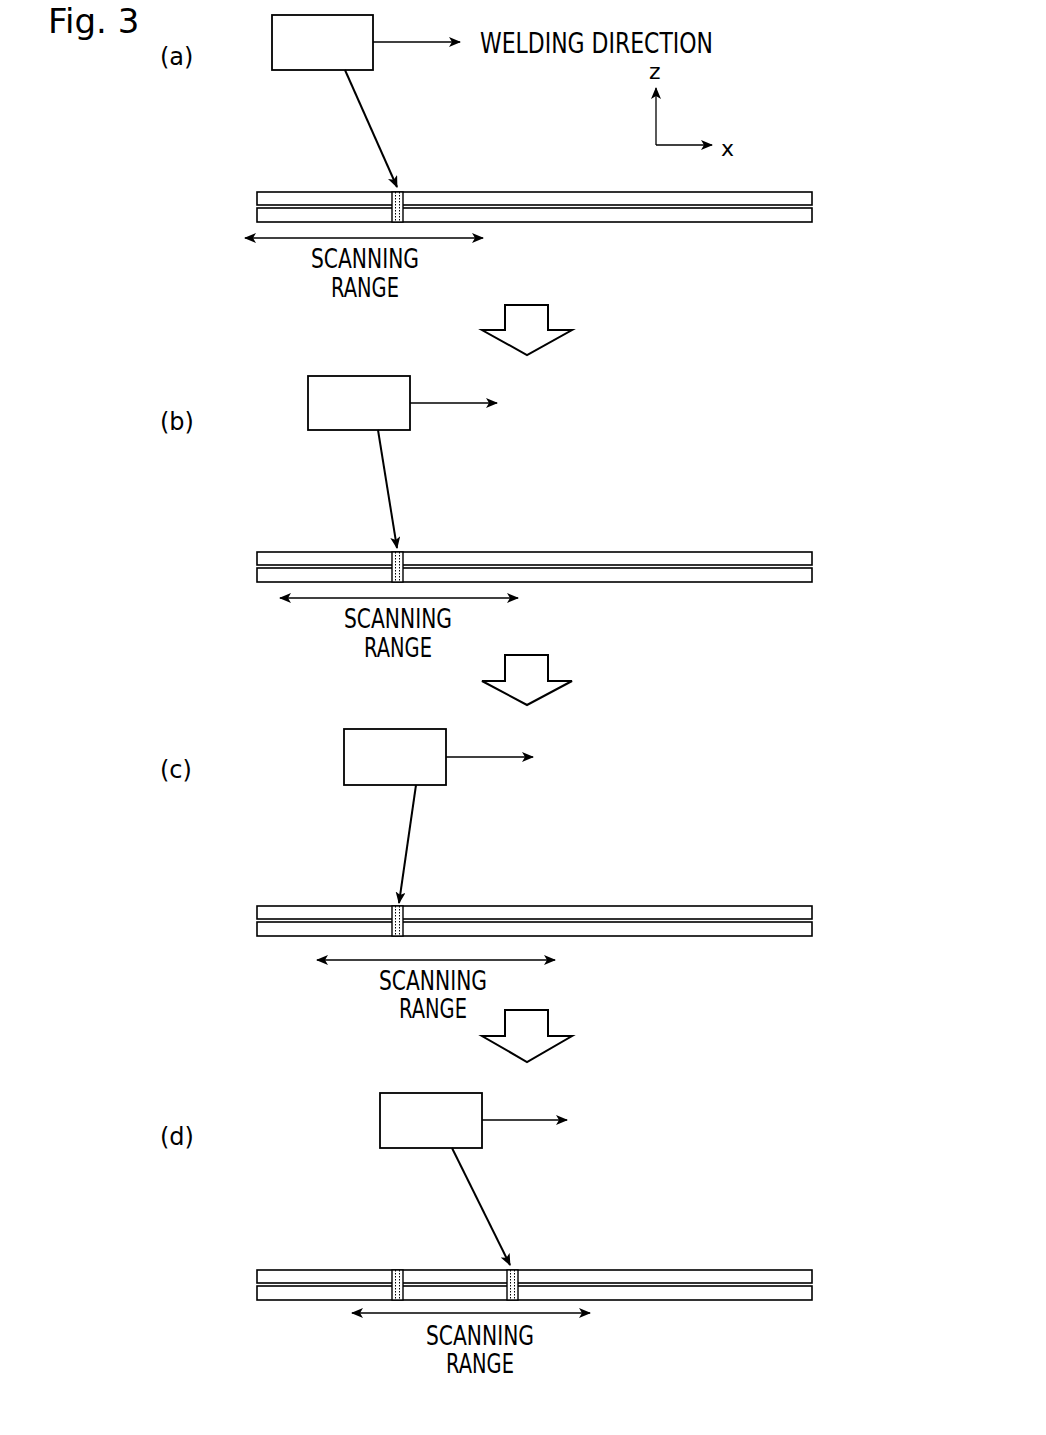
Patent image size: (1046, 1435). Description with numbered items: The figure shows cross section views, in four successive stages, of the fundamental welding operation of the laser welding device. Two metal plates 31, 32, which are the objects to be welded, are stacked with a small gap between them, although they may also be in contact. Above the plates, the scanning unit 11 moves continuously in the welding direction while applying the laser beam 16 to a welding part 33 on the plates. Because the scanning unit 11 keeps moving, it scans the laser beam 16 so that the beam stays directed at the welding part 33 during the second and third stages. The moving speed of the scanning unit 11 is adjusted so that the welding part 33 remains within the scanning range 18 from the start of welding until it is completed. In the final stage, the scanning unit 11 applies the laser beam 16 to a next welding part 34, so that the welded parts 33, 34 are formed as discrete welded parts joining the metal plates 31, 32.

The scanning unit 11 is at (284, 71).
The laser beam 16 is at (367, 118).
The scanning range 18 is at (270, 239).
The metal plate 31 is at (775, 192).
The metal plate 32 is at (775, 222).
The welding part 33 is at (401, 191).
The next welding part 34 is at (514, 1270).